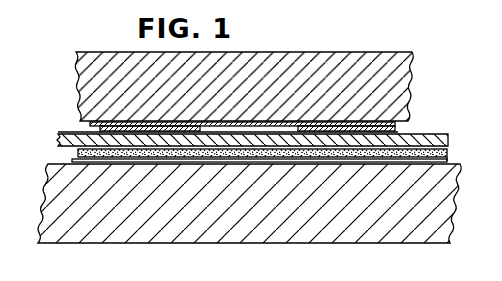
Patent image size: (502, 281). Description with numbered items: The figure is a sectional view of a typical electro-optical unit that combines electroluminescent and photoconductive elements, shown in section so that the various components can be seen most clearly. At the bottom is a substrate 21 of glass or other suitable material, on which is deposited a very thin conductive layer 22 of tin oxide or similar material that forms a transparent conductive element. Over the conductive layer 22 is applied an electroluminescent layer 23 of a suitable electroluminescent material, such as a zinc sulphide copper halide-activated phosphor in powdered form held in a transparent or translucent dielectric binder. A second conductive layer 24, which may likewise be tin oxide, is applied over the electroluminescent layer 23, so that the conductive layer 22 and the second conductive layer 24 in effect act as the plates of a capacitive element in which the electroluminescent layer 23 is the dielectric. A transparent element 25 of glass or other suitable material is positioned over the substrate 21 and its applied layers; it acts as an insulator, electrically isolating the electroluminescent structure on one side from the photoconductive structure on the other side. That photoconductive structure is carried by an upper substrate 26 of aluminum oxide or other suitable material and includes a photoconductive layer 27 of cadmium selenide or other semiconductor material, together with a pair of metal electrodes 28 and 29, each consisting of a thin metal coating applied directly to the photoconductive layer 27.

The substrate 21 is at (333, 232).
The conductive layer 22 is at (72, 161).
The electroluminescent layer 23 is at (78, 154).
The second conductive layer 24 is at (446, 155).
The transparent element 25 is at (448, 136).
The substrate 26 is at (327, 60).
The photoconductive layer 27 is at (397, 125).
The metal electrode 28 is at (100, 131).
The metal electrode 29 is at (398, 132).